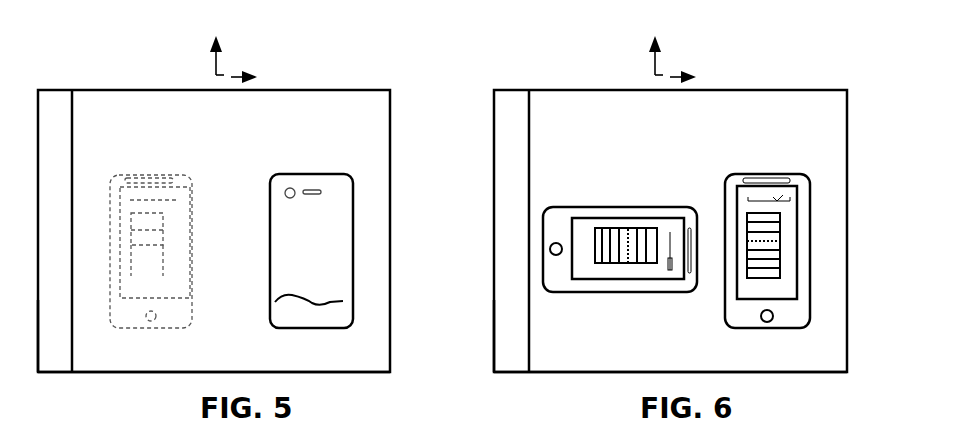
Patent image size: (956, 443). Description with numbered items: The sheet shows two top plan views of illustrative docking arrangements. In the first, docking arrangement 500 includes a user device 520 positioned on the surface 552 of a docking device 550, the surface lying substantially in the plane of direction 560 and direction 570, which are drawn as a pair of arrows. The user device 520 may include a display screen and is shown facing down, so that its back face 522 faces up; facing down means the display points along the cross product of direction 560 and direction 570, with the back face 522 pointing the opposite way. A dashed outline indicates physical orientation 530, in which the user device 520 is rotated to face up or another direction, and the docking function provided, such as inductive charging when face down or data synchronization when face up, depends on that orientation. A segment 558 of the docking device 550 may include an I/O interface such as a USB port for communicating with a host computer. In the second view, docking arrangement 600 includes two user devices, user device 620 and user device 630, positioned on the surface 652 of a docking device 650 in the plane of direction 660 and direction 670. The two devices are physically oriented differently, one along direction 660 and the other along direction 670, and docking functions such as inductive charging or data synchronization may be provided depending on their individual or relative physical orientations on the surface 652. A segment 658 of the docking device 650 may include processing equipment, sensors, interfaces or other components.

In FIG. 5, the docking arrangement 500 is at (78, 77).
In FIG. 5, the user device 520 is at (340, 172).
In FIG. 5, the back face 522 is at (330, 249).
In FIG. 5, the physical orientation 530 is at (141, 172).
In FIG. 5, the docking device 550 is at (350, 373).
In FIG. 5, the surface 552 is at (253, 127).
In FIG. 5, the segment 558 is at (62, 387).
In FIG. 5, the direction 560 is at (216, 43).
In FIG. 5, the direction 570 is at (264, 77).
In FIG. 6, the docking arrangement 600 is at (534, 77).
In FIG. 6, the user device 620 is at (790, 172).
In FIG. 6, the user device 630 is at (581, 205).
In FIG. 6, the docking device 650 is at (805, 373).
In FIG. 6, the surface 652 is at (695, 127).
In FIG. 6, the segment 658 is at (518, 387).
In FIG. 6, the direction 660 is at (655, 43).
In FIG. 6, the direction 670 is at (703, 77).